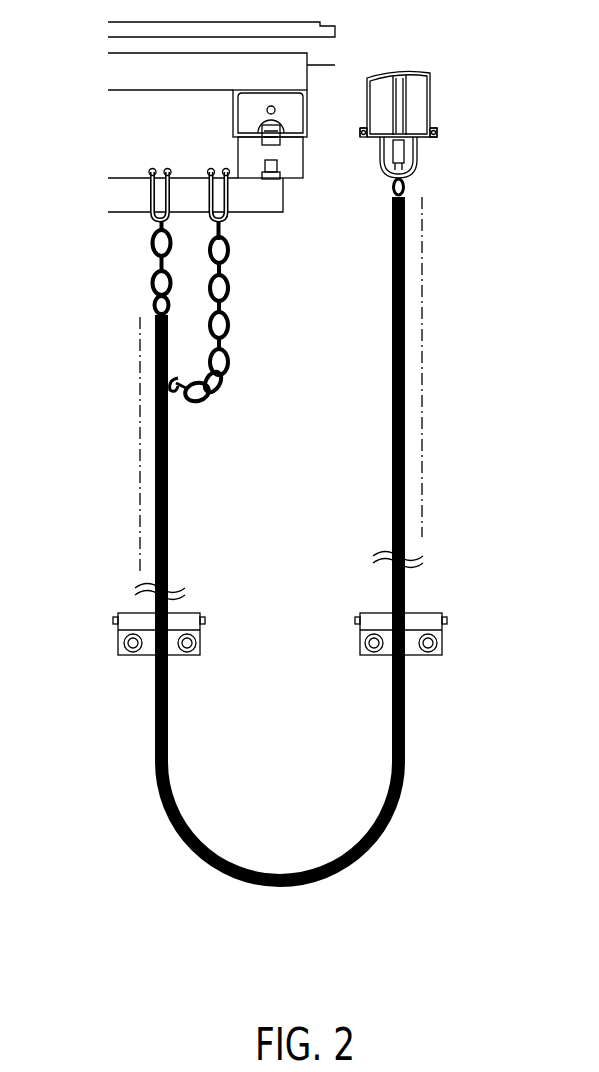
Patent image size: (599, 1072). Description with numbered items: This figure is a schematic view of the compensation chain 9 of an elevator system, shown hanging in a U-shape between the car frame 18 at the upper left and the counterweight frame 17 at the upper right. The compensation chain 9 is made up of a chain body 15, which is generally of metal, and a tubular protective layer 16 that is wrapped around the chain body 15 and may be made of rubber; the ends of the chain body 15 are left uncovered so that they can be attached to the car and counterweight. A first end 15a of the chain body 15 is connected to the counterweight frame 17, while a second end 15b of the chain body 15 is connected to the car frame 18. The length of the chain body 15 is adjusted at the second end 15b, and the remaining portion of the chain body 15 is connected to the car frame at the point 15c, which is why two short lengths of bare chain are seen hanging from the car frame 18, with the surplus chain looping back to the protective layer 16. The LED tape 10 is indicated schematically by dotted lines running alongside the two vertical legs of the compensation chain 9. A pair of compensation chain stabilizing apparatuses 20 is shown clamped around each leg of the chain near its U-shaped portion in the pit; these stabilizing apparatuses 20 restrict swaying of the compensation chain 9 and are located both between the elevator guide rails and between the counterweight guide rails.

The compensation chain 9 is at (442, 530).
The LED tape 10 is at (118, 449).
The chain body 15 is at (229, 325).
The first end 15a is at (405, 190).
The second end 15b is at (151, 243).
The connection point 15c is at (222, 237).
The tubular protective layer 16 is at (168, 530).
The counterweight frame 17 is at (455, 128).
The car frame 18 is at (311, 141).
The compensation chain stabilizing apparatus 20 is at (118, 634).